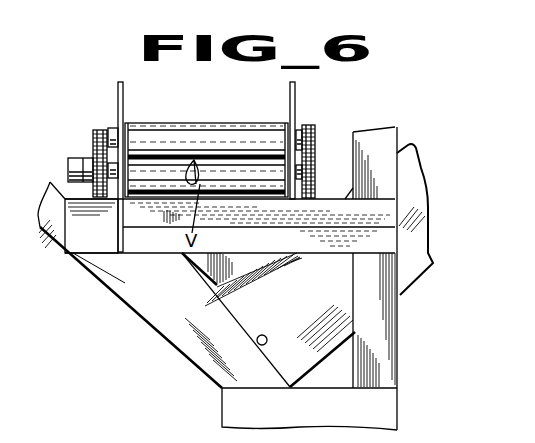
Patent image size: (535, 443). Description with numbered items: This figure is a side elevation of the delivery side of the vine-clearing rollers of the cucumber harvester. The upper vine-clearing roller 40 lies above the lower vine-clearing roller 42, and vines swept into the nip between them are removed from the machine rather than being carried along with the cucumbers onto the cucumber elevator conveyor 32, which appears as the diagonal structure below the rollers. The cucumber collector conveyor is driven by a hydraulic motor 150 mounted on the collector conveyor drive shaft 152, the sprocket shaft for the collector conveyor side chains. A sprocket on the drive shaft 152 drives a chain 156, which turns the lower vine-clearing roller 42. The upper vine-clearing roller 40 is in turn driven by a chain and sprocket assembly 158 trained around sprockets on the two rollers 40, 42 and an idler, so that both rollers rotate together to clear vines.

The cucumber elevator conveyor 32 is at (244, 324).
The upper vine-clearing roller 40 is at (220, 128).
The lower vine-clearing roller 42 is at (237, 198).
The hydraulic motor 150 is at (71, 159).
The collector conveyor drive shaft 152 is at (113, 192).
The chain 156 is at (108, 128).
The chain and sprocket assembly 158 is at (316, 148).